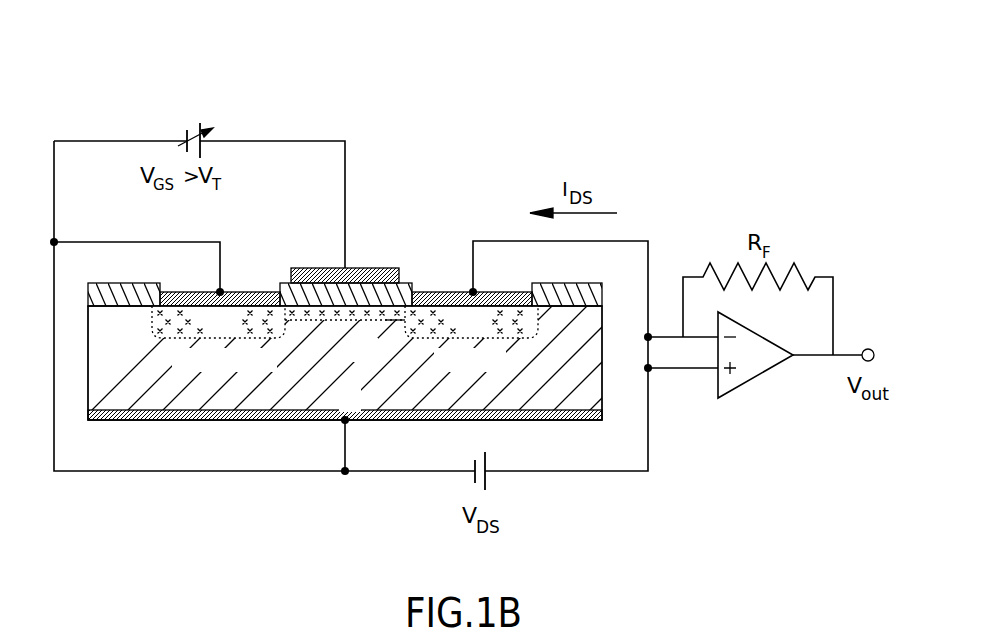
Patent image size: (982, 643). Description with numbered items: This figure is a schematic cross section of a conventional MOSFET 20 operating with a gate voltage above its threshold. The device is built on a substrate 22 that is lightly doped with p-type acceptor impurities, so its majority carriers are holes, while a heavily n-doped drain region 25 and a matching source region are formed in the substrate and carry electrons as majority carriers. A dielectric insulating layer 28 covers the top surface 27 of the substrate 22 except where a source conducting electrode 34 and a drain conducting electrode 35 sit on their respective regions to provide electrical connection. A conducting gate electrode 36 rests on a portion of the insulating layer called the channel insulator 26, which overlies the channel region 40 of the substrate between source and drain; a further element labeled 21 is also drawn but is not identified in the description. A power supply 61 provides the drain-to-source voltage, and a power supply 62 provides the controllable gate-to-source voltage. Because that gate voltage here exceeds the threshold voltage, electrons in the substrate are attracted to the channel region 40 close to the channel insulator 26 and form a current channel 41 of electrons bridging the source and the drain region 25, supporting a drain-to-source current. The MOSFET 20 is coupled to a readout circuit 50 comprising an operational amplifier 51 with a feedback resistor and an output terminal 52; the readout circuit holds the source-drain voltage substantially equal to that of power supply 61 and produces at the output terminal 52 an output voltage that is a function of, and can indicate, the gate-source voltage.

The MOSFET 20 is at (148, 42).
The source contact electrode 21 is at (182, 287).
The substrate 22 is at (375, 359).
The drain region 25 is at (418, 305).
The channel insulator 26 is at (307, 292).
The top surface 27 is at (277, 300).
The dielectric insulating layer 28 is at (610, 295).
The source conducting electrode 34 is at (247, 291).
The drain conducting electrode 35 is at (431, 291).
The gate electrode 36 is at (352, 268).
The channel region 40 is at (330, 335).
The current channel 41 is at (392, 322).
The readout circuit 50 is at (780, 395).
The operational amplifier 51 is at (753, 362).
The output terminal 52 is at (866, 348).
The power supply 61 is at (490, 478).
The power supply 62 is at (185, 133).